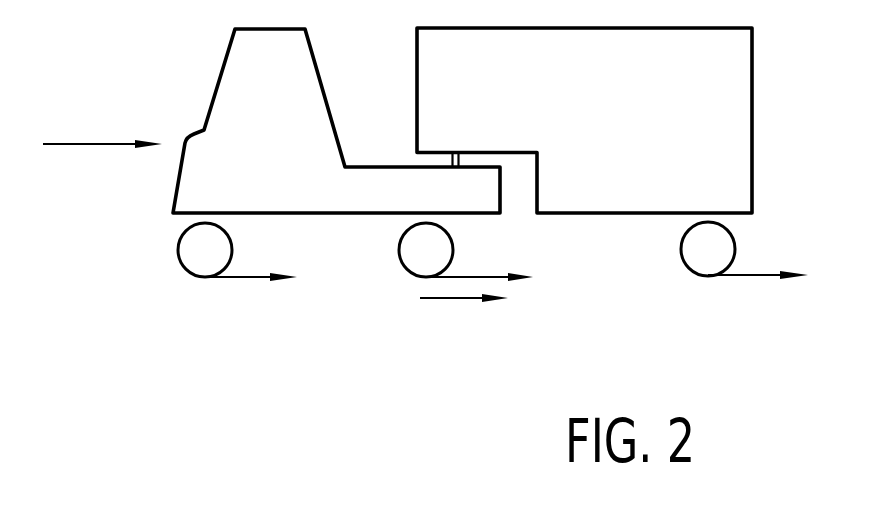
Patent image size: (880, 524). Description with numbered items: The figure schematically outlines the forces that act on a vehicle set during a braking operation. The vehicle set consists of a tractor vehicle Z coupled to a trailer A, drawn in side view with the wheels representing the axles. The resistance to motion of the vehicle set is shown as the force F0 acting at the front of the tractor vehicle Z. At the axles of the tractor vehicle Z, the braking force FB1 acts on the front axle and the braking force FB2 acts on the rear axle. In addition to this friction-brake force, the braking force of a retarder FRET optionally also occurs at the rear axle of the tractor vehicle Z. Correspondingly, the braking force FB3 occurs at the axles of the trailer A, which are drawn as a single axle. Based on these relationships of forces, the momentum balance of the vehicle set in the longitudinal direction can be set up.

The tractor vehicle Z is at (336, 121).
The trailer A is at (584, 120).
The resistance to motion F0 is at (102, 164).
The braking force on the front axle FB1 is at (252, 298).
The braking force on the rear axle FB2 is at (480, 256).
The braking force of a retarder FRET is at (464, 318).
The braking force at the trailer axles FB3 is at (758, 294).